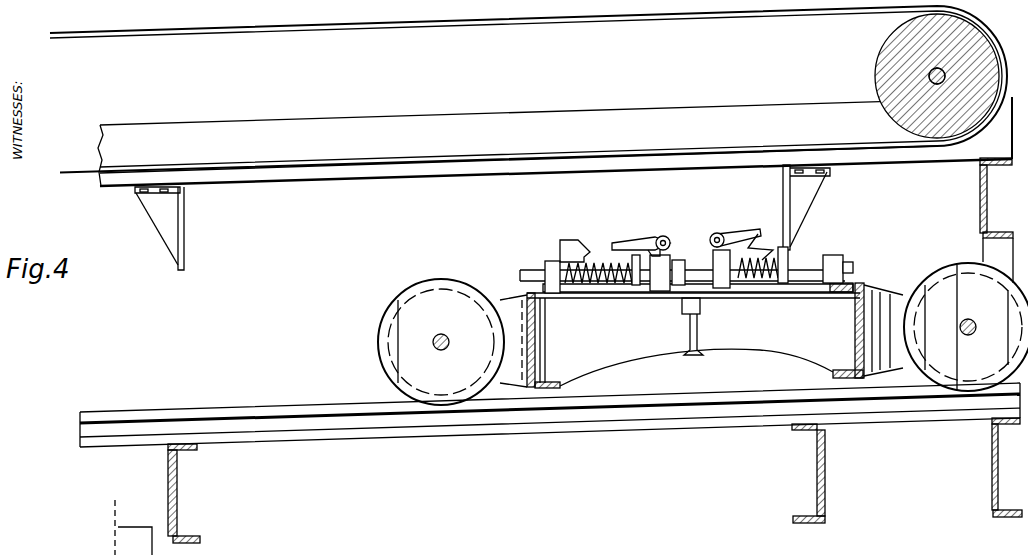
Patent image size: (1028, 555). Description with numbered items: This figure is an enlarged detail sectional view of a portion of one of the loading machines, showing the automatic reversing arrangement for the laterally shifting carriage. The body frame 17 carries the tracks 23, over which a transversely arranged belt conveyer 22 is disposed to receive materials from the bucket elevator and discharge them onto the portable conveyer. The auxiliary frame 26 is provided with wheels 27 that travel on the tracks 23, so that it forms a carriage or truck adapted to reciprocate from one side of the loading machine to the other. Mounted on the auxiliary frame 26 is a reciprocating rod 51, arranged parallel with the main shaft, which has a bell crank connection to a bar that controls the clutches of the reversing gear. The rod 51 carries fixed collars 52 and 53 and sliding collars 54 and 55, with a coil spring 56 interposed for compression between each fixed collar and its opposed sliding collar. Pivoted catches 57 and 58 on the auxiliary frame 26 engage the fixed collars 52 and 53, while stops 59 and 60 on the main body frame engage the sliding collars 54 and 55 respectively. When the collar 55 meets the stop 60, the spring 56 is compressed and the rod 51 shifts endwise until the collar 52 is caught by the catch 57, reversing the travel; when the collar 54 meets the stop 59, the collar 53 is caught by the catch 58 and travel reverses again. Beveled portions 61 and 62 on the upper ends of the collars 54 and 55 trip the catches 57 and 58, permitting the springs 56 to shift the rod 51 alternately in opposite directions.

The body frame 17 is at (826, 511).
The belt conveyer 22 is at (390, 31).
The tracks 23 is at (317, 441).
The auxiliary frame 26 is at (542, 388).
The wheels 27 is at (398, 325).
The reciprocating rod 51 is at (853, 266).
The fixed collar 52 is at (660, 297).
The fixed collar 53 is at (735, 289).
The sliding collar 54 is at (560, 296).
The sliding collar 55 is at (785, 287).
The coil spring 56 is at (597, 263).
The pivoted catch 57 is at (650, 242).
The pivoted catch 58 is at (737, 240).
The stop 59 is at (184, 241).
The stop 60 is at (800, 200).
The beveled portion 61 is at (588, 240).
The beveled portion 62 is at (757, 250).